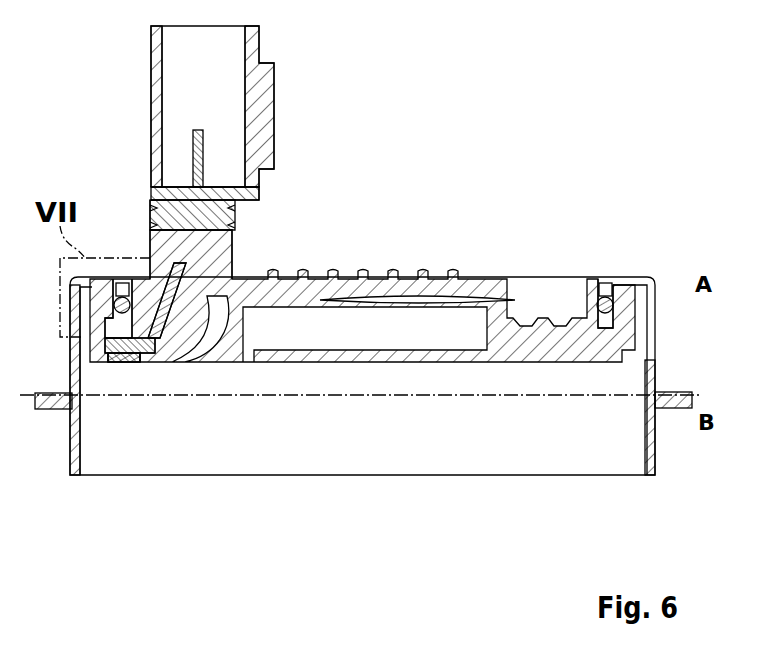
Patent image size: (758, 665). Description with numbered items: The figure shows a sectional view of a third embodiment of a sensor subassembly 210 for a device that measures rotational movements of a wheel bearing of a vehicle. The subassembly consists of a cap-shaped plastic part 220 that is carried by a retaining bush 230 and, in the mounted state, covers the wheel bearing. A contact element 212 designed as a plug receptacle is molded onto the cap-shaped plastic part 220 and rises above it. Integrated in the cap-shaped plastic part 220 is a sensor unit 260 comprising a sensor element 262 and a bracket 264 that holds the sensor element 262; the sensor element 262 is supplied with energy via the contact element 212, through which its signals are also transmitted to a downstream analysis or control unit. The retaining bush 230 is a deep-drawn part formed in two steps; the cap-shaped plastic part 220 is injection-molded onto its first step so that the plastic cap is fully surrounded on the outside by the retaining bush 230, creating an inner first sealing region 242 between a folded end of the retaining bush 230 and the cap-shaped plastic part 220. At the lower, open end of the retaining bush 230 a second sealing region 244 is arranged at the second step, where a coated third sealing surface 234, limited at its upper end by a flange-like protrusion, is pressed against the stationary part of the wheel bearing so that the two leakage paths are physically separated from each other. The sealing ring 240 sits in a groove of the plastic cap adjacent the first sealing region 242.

The sensor subassembly 210 is at (583, 157).
The contact element 212 is at (274, 118).
The cap-shaped plastic part 220 is at (362, 282).
The retaining bush 230 is at (366, 405).
The third sealing surface 234 is at (64, 446).
The sealing ring 240 is at (122, 297).
The first sealing region 242 is at (104, 240).
The second sealing region 244 is at (55, 430).
The sensor unit 260 is at (208, 257).
The sensor element 262 is at (120, 365).
The bracket 264 is at (168, 365).